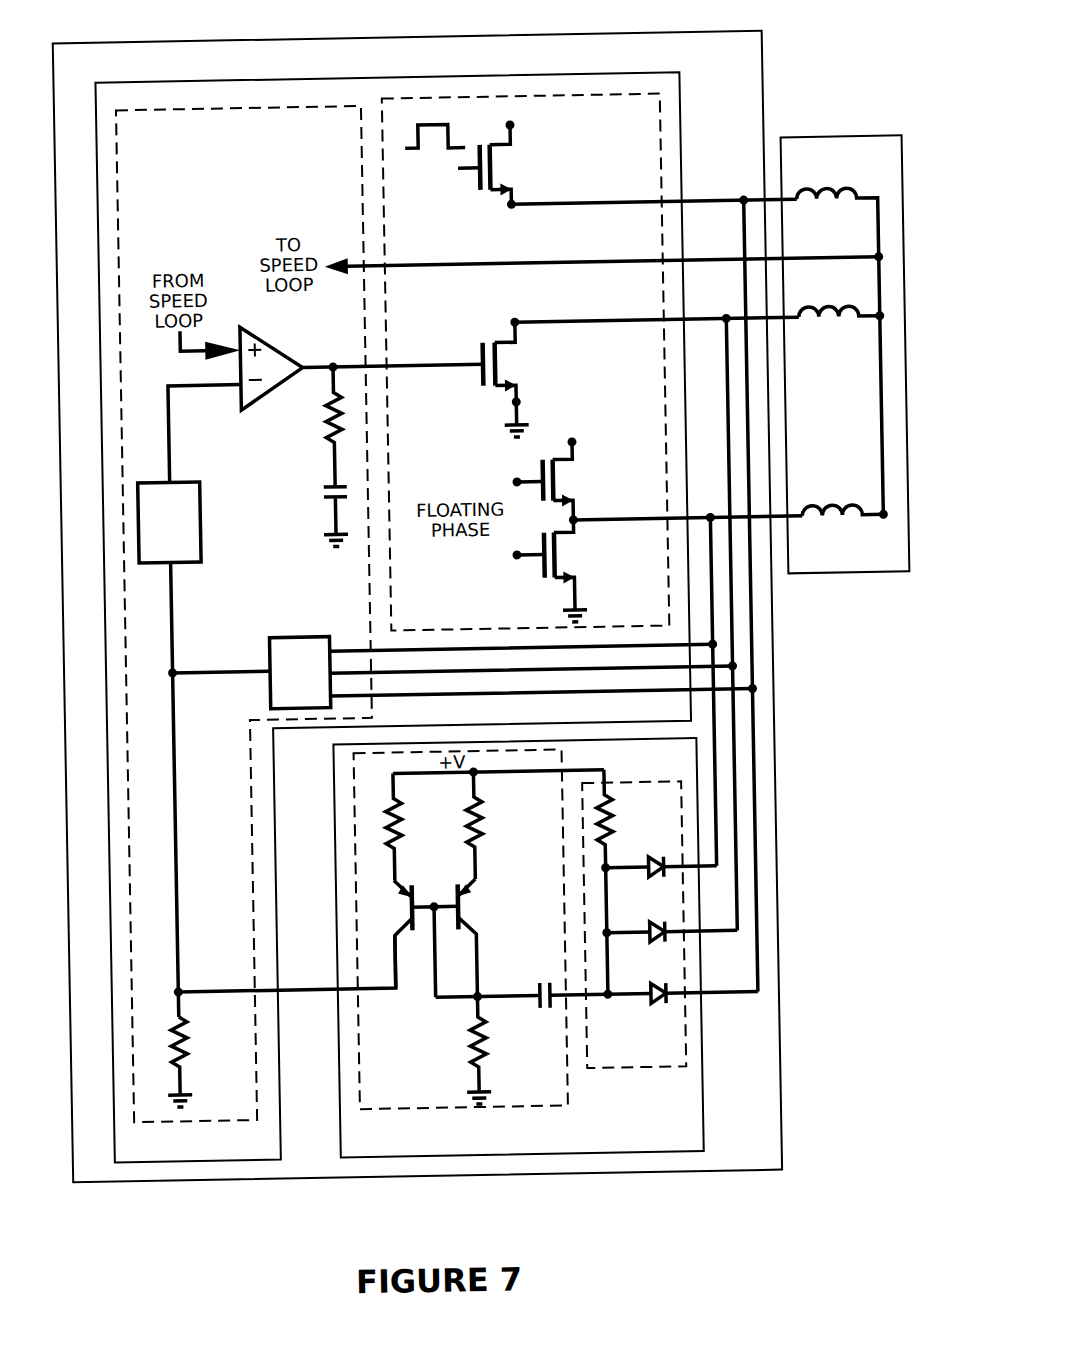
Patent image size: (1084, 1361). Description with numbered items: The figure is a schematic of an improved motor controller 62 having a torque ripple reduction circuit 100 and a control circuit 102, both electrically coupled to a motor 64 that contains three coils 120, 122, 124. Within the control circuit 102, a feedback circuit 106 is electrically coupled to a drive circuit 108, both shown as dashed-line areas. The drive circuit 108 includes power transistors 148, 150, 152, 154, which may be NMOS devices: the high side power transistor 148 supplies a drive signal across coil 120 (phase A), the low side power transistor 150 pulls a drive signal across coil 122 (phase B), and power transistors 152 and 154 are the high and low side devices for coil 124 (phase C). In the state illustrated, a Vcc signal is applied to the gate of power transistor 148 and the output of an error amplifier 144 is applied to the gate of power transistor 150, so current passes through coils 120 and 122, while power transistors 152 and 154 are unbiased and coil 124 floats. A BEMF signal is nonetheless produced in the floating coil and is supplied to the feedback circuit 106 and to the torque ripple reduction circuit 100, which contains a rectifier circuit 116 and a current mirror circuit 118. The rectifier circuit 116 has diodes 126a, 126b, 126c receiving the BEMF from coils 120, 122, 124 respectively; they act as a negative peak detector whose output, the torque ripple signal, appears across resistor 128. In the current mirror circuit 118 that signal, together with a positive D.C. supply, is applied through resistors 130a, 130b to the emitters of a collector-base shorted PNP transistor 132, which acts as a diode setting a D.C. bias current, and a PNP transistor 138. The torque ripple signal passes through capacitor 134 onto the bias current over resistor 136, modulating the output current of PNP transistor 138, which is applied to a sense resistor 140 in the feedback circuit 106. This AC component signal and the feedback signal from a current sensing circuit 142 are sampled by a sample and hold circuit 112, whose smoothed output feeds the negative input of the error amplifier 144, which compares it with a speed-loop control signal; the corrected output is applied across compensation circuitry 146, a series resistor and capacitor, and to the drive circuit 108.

The motor controller 62 is at (288, 38).
The control circuit 102 is at (497, 79).
The torque ripple reduction circuit 100 is at (598, 1156).
The feedback circuit 106 is at (247, 614).
The drive circuit 108 is at (526, 362).
The current mirror circuit 118 is at (461, 929).
The rectifier circuit 116 is at (634, 924).
The spindle motor 64 is at (820, 144).
The error amplifier 144 is at (282, 345).
The compensation circuitry 146 is at (307, 457).
The sample and hold circuit 112 is at (169, 522).
The current sensing circuit 142 is at (464, 669).
The power transistor 148 is at (482, 169).
The power transistor 150 is at (489, 378).
The power transistor 152 is at (568, 479).
The power transistor 154 is at (568, 571).
The coil 120 is at (839, 335).
The coil 122 is at (841, 315).
The coil 124 is at (845, 513).
The sense resistor 140 is at (204, 1061).
The resistor 130b is at (425, 826).
The resistor 130a is at (505, 825).
The PNP transistor 138 is at (385, 934).
The PNP transistor 132 is at (493, 937).
The capacitor 134 is at (521, 1012).
The resistor 136 is at (458, 1050).
The resistor 128 is at (629, 882).
The diode 126c is at (661, 884).
The diode 126b is at (672, 948).
The diode 126a is at (683, 1008).